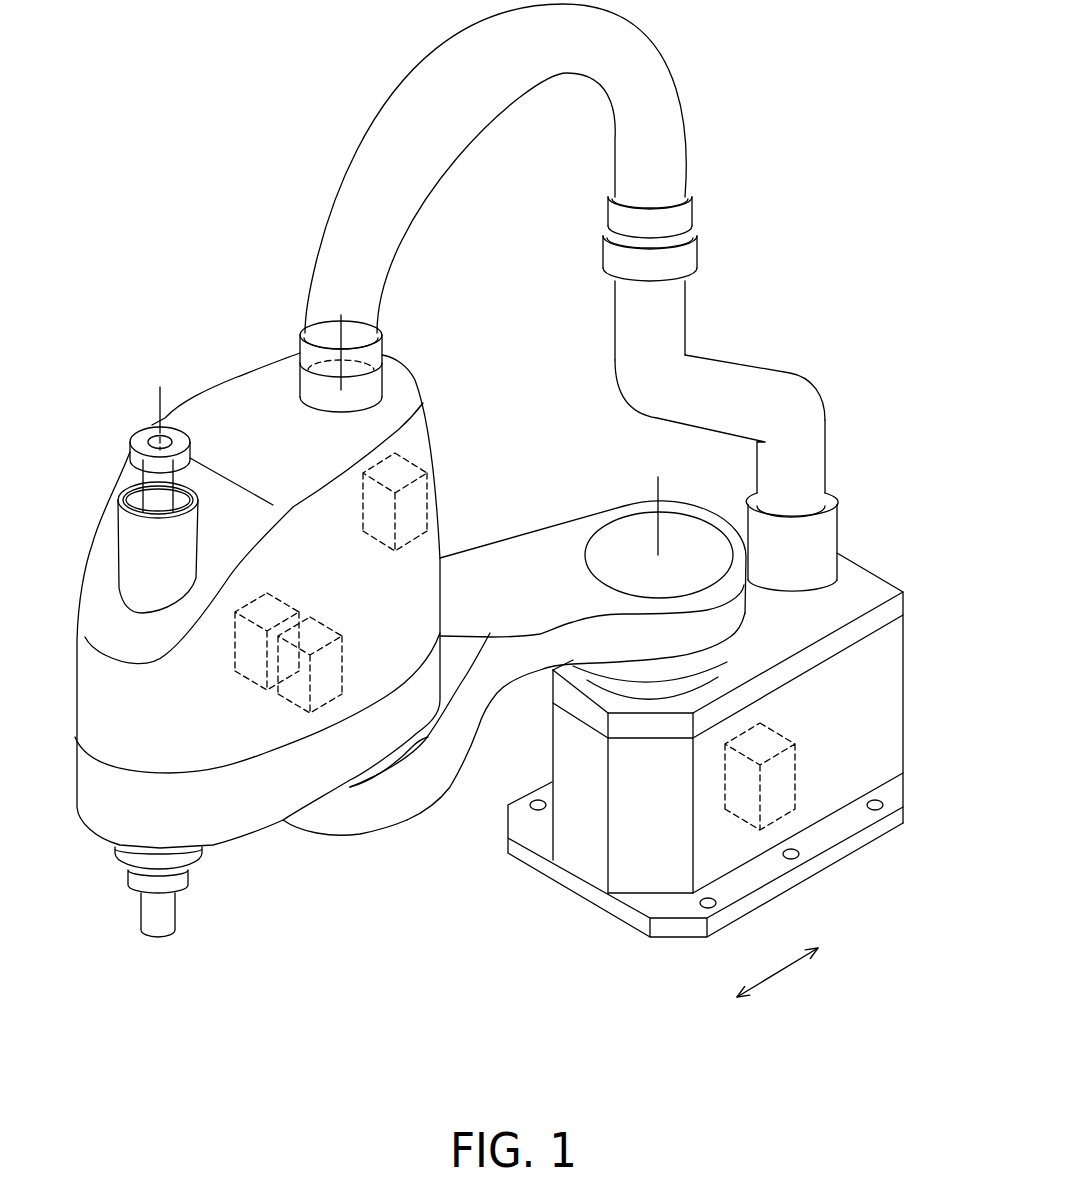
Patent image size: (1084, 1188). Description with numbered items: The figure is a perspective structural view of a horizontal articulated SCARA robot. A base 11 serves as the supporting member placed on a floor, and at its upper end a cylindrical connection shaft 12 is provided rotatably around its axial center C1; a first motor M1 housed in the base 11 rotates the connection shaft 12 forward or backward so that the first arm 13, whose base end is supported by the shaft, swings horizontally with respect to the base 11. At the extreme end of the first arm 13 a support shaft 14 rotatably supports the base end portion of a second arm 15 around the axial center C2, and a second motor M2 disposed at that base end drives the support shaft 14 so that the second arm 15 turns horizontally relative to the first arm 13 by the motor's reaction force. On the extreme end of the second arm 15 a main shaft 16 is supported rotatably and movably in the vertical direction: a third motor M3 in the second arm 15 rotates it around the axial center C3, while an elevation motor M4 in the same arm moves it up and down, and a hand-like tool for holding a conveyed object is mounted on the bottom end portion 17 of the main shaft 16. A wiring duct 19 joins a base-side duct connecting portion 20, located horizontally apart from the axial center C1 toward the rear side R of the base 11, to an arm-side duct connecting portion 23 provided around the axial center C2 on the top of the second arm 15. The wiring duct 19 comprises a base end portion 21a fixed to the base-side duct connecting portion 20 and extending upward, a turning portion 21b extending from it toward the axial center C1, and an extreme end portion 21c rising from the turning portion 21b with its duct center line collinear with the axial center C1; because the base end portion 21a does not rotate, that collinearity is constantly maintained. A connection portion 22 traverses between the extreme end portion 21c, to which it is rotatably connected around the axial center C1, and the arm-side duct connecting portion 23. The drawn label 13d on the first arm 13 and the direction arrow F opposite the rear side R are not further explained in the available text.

The base 11 is at (730, 745).
The connection shaft 12 is at (611, 536).
The first arm 13 is at (548, 634).
The lower surface of first arm 13d is at (517, 673).
The support shaft 14 is at (411, 748).
The second arm 15 is at (287, 565).
The main shaft 16 is at (162, 510).
The bottom end portion 17 is at (170, 930).
The wiring duct 19 is at (763, 387).
The base-side duct connecting portion 20 is at (828, 530).
The base end portion 21a is at (822, 454).
The turning portion 21b is at (757, 370).
The extreme end portion 21c is at (680, 298).
The connection portion 22 is at (680, 130).
The arm-side duct connecting portion 23 is at (376, 362).
The axial center C1 is at (658, 501).
The axial center C2 is at (342, 336).
The axial center C3 is at (160, 415).
The first motor M1 is at (797, 756).
The second motor M2 is at (418, 457).
The third motor M3 is at (235, 660).
The elevation motor M4 is at (280, 705).
The rear side R is at (789, 963).
The front direction F is at (732, 1004).